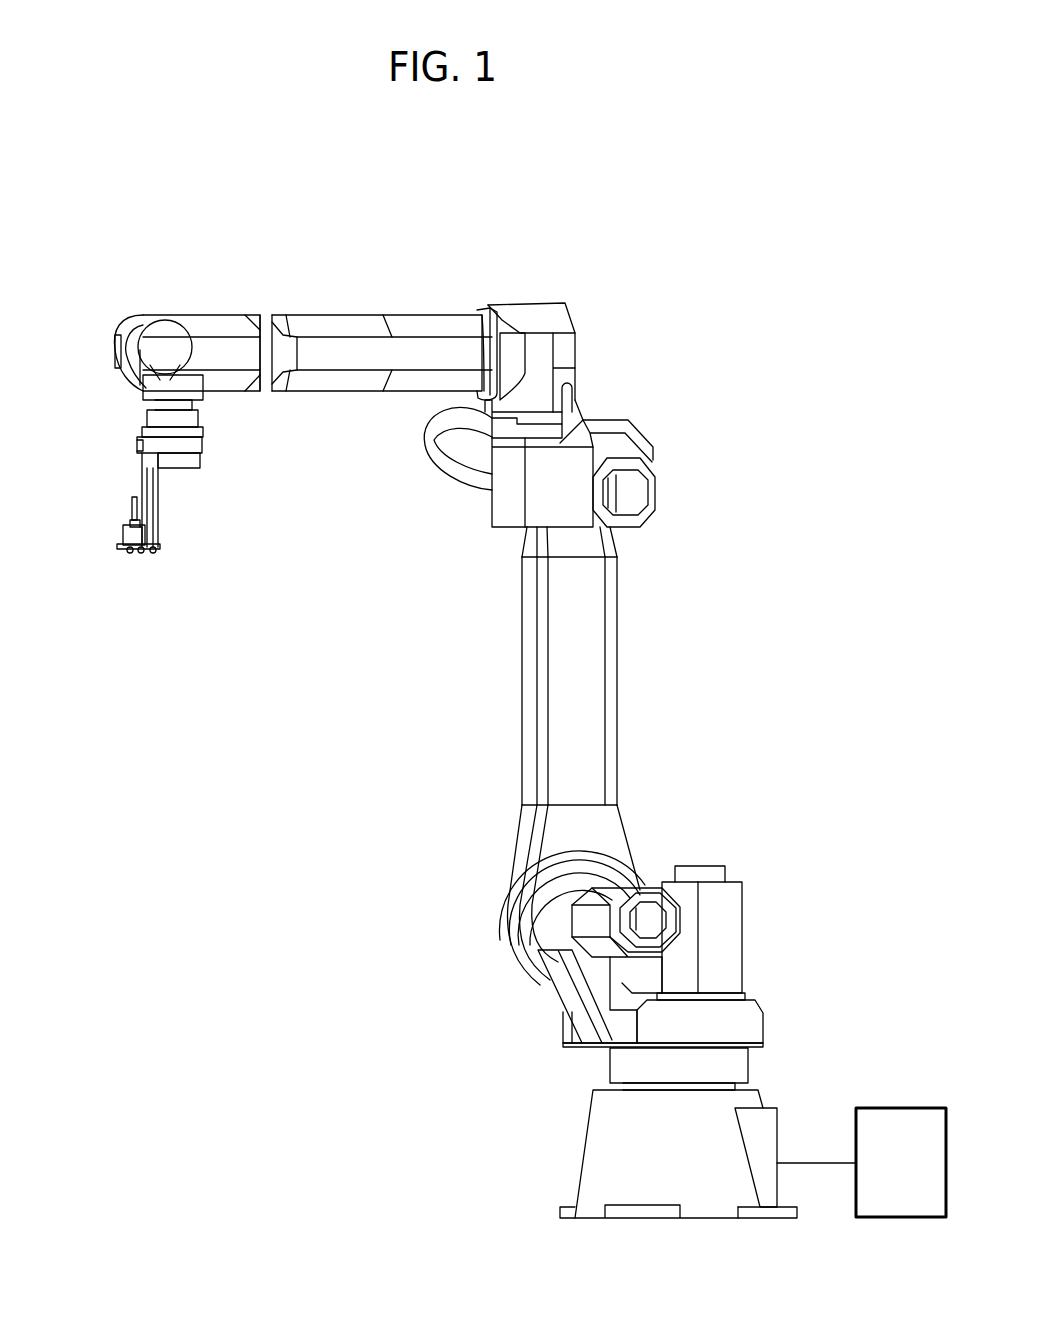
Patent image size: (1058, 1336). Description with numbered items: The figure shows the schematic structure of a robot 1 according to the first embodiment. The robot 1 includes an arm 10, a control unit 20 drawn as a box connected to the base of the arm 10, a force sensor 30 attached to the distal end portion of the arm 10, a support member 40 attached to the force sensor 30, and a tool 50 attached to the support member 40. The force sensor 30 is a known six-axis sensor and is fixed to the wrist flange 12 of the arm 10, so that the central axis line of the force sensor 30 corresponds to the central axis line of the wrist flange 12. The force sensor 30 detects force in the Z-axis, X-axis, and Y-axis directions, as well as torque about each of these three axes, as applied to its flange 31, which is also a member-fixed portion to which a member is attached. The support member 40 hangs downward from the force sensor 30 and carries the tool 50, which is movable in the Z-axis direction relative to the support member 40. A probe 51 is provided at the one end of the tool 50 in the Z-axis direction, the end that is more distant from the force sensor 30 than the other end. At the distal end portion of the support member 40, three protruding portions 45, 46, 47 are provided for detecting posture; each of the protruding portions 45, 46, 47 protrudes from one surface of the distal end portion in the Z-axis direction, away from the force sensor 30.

The robot 1 is at (546, 273).
The arm 10 is at (623, 665).
The wrist flange 12 is at (200, 420).
The control unit 20 is at (897, 1107).
The force sensor 30 is at (137, 443).
The flange 31 is at (200, 458).
The support member 40 is at (133, 483).
The protruding portion 45 is at (162, 547).
The protruding portion 46 is at (141, 552).
The protruding portion 47 is at (121, 545).
The tool 50 is at (132, 510).
The probe 51 is at (135, 551).